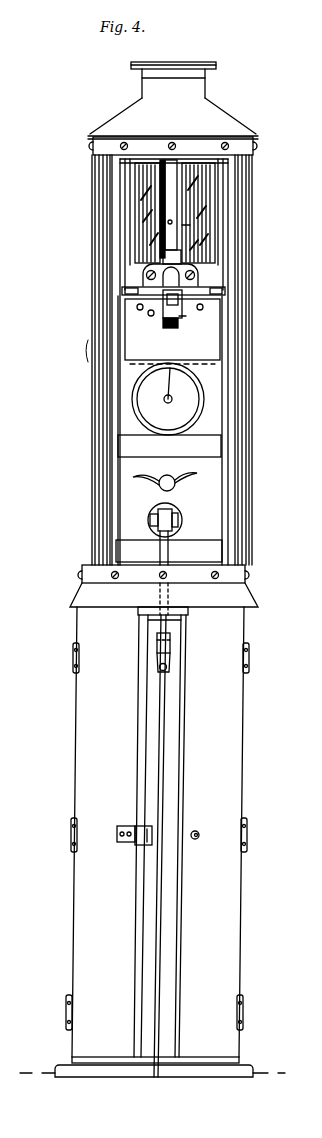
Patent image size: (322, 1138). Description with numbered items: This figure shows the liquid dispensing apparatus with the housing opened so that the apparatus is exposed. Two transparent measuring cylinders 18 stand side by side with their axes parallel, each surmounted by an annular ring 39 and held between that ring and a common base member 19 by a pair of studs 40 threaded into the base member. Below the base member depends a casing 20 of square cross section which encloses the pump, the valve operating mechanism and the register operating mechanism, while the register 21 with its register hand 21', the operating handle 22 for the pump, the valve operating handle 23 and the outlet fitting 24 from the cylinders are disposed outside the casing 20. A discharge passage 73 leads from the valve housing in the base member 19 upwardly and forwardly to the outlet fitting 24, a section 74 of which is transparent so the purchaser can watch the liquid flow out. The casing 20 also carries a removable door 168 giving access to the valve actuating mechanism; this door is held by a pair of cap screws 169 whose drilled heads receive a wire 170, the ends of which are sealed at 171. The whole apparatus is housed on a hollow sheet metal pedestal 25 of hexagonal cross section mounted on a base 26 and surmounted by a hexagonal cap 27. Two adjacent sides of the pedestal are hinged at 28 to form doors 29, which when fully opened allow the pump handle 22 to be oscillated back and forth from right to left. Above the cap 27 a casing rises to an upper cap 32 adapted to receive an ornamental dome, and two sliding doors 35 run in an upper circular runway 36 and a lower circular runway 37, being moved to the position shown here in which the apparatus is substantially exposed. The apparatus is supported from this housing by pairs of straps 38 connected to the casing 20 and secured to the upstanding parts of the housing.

The transparent measuring cylinder 18 is at (152, 205).
The base member 19 is at (225, 292).
The casing 20 is at (198, 508).
The register 21 is at (222, 399).
The register hand 21' is at (106, 398).
The operating handle 22 is at (160, 552).
The valve operating handle 23 is at (194, 479).
The outlet fitting 24 is at (194, 322).
The pedestal 25 is at (176, 772).
The base 26 is at (60, 1066).
The cap 27 is at (90, 594).
The hinge 28 is at (75, 656).
The door 29 is at (154, 878).
The cap 32 is at (173, 99).
The door 35 is at (110, 272).
The upper circular runway 36 is at (250, 157).
The lower circular runway 37 is at (238, 576).
The strap 38 is at (202, 446).
The annular ring 39 is at (196, 161).
The stud 40 is at (150, 232).
The discharge passage 73 is at (222, 233).
The transparent section 74 is at (196, 270).
The removable door 168 is at (200, 343).
The cap screw 169 is at (138, 306).
The wire 170 is at (186, 315).
The seal 171 is at (150, 313).